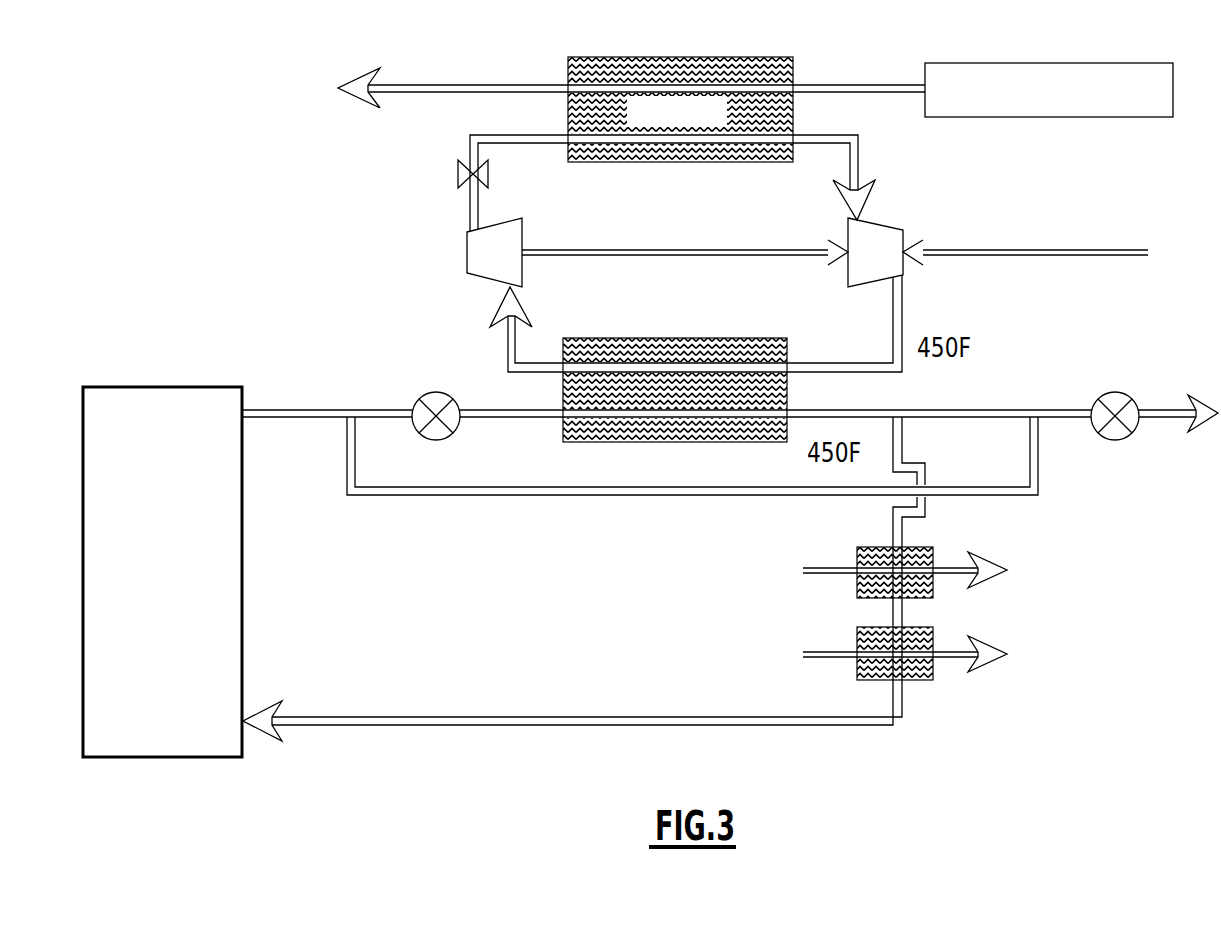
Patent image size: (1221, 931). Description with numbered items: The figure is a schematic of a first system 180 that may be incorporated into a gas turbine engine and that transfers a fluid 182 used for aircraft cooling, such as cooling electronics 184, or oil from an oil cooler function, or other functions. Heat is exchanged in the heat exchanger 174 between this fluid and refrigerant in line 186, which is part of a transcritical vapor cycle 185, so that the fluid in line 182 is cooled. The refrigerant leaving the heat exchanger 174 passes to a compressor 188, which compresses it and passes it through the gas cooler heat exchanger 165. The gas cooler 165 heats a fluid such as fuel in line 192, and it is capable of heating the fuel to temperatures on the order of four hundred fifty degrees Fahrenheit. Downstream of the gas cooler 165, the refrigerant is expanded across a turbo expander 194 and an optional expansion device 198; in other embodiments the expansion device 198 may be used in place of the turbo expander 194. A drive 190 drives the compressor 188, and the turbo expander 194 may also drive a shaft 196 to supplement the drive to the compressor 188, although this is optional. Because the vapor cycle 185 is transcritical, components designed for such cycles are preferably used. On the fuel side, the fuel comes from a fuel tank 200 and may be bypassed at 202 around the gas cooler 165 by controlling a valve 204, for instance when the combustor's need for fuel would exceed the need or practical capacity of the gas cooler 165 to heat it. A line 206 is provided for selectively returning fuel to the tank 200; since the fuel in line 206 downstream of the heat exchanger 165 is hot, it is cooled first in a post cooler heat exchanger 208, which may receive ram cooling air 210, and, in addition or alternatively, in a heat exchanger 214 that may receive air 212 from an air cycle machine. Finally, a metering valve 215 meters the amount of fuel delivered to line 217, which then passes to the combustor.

The first system 180 is at (206, 122).
The fluid 182 is at (505, 84).
The heat exchanger 174 is at (686, 70).
The electronics 184 is at (1115, 118).
The transcritical vapor cycle 185 is at (425, 150).
The line 186 is at (862, 163).
The expansion device 198 is at (458, 187).
The turbo expander 194 is at (517, 236).
The shaft 196 is at (742, 246).
The compressor 188 is at (865, 268).
The drive 190 is at (1020, 256).
The gas cooler heat exchanger 165 is at (720, 355).
The fuel tank 200 is at (150, 410).
The line 192 is at (880, 410).
The line 217 is at (1160, 410).
The bypass 202 is at (347, 458).
The valve 204 is at (435, 436).
The metering valve 215 is at (1108, 402).
The line 206 is at (905, 451).
The ram cooling air 210 is at (857, 550).
The post cooler heat exchanger 208 is at (934, 589).
The heat exchanger 214 is at (857, 633).
The air 212 is at (952, 661).